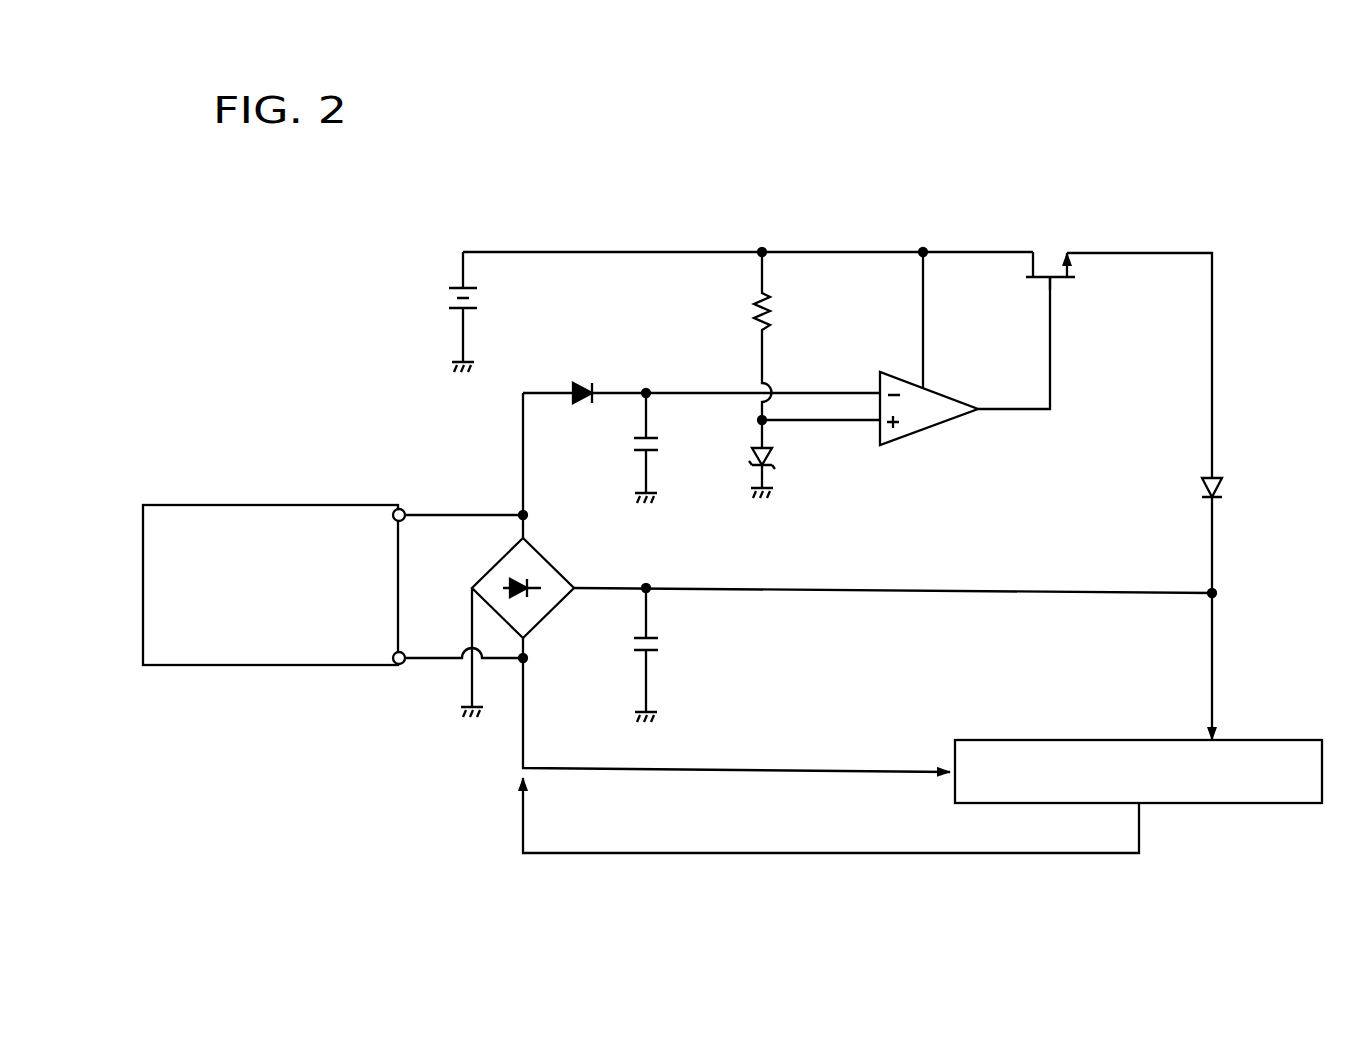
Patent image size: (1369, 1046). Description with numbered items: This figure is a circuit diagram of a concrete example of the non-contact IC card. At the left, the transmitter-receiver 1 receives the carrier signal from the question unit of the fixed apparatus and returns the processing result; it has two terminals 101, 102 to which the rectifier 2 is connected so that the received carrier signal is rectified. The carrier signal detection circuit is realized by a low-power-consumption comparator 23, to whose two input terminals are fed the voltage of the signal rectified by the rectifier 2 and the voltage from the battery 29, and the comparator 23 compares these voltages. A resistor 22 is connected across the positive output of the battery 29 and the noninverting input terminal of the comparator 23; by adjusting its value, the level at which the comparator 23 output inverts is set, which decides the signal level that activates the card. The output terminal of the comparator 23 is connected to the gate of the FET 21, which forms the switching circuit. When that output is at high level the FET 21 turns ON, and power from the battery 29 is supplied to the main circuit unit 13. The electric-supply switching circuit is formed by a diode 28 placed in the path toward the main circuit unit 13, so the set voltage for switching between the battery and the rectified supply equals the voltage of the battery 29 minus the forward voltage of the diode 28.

The transmitter-receiver 1 is at (340, 506).
The terminal 101 is at (404, 510).
The terminal 102 is at (405, 666).
The rectifier 2 is at (542, 553).
The battery 29 is at (462, 288).
The resistor 22 is at (757, 298).
The comparator 23 is at (927, 430).
The FET 21 is at (1058, 278).
The diode 28 is at (1222, 480).
The main circuit unit 13 is at (1255, 741).